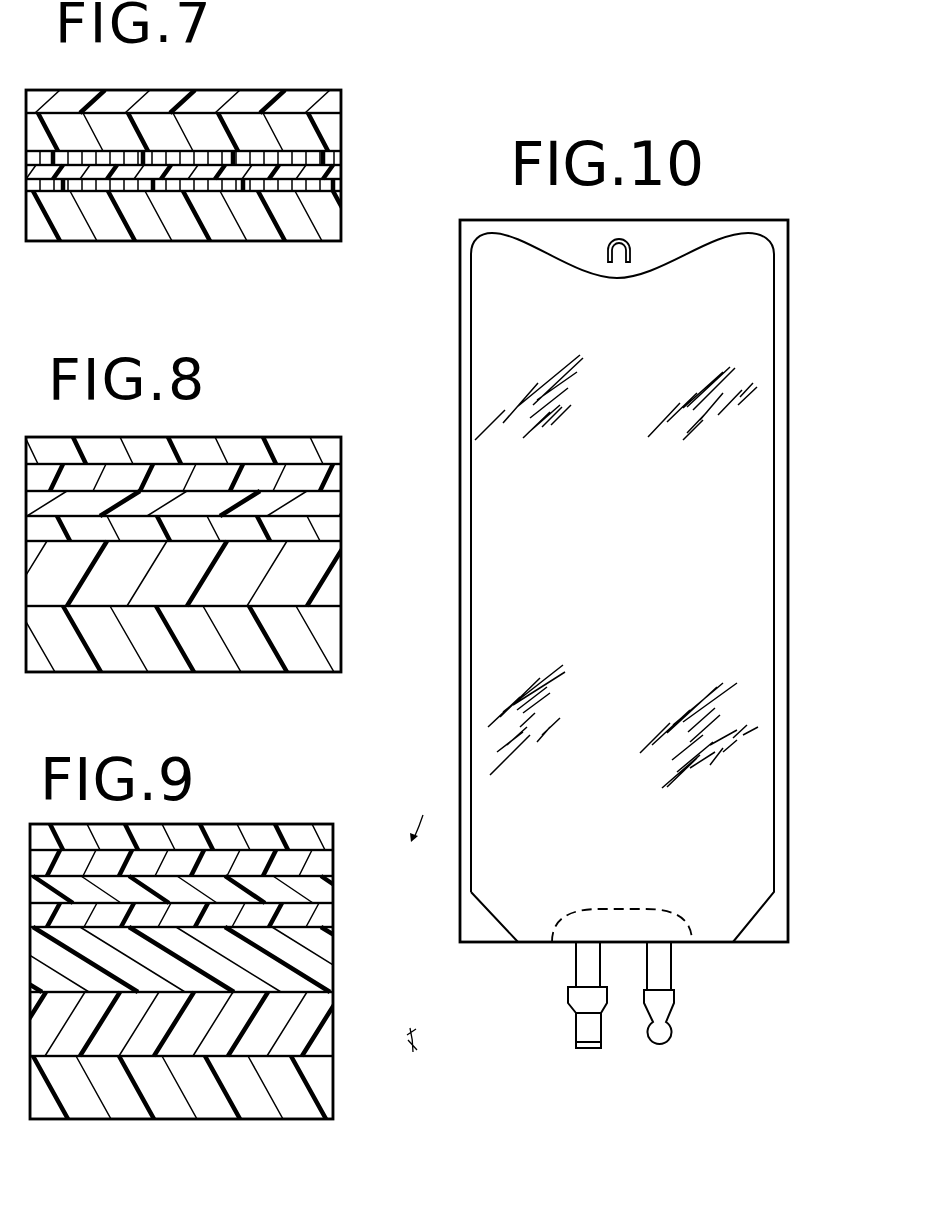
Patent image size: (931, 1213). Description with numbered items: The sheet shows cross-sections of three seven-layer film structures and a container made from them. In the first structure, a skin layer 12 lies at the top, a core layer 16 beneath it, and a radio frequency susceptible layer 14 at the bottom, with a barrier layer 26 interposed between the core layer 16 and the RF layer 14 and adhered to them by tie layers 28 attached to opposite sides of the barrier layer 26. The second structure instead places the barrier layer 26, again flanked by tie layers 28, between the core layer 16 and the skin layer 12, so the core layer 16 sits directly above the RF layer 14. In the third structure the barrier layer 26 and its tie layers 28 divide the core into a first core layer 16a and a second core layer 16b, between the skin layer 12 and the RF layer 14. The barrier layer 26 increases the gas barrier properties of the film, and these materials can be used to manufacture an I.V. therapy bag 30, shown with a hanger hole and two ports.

In FIG. 7, the skin layer 12 is at (341, 104).
In FIG. 8, the skin layer 12 is at (330, 449).
In FIG. 9, the skin layer 12 is at (328, 836).
In FIG. 7, the radio frequency susceptible layer 14 is at (334, 209).
In FIG. 8, the radio frequency susceptible layer 14 is at (330, 641).
In FIG. 9, the radio frequency susceptible layer 14 is at (322, 1078).
In FIG. 7, the core layer 16 is at (334, 136).
In FIG. 8, the core layer 16 is at (332, 578).
In FIG. 9, the first core layer 16a is at (325, 868).
In FIG. 9, the second core layer 16b is at (320, 1019).
In FIG. 7, the barrier layer 26 is at (334, 172).
In FIG. 8, the barrier layer 26 is at (330, 504).
In FIG. 9, the barrier layer 26 is at (325, 918).
In FIG. 7, the tie layers 28 is at (334, 159).
In FIG. 8, the tie layers 28 is at (332, 479).
In FIG. 9, the tie layers 28 is at (325, 889).
In FIG. 10, the I.V. therapy bag 30 is at (796, 484).